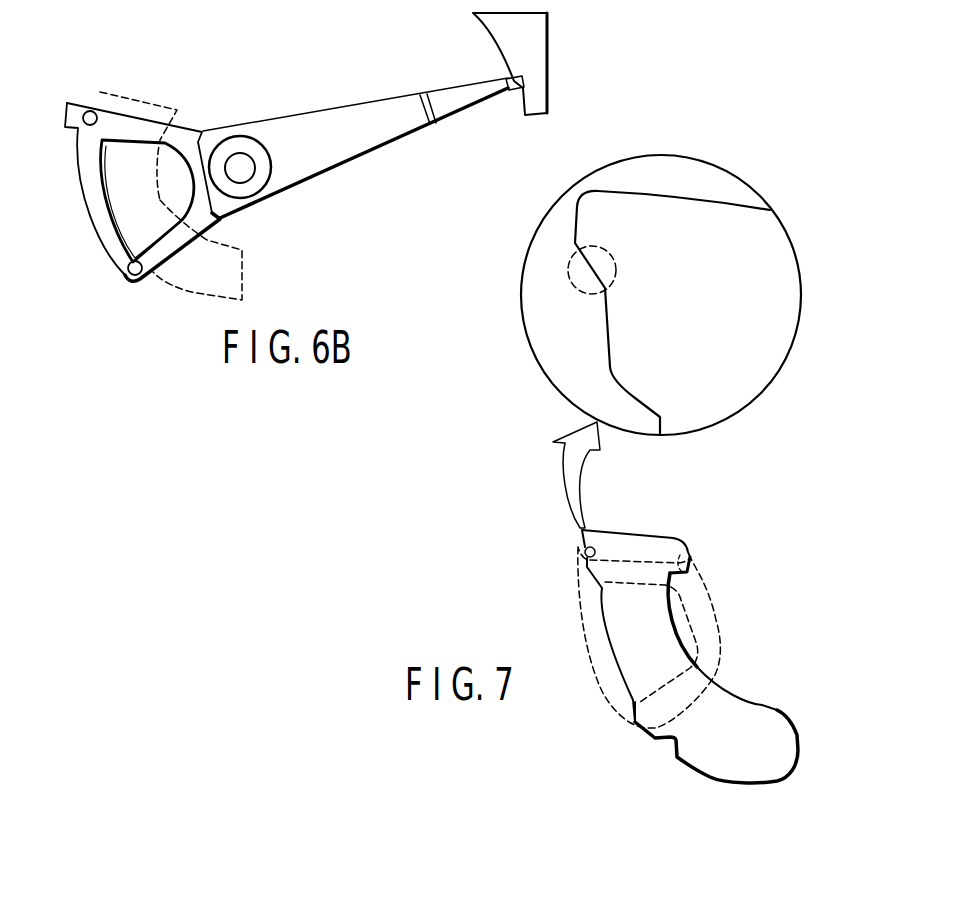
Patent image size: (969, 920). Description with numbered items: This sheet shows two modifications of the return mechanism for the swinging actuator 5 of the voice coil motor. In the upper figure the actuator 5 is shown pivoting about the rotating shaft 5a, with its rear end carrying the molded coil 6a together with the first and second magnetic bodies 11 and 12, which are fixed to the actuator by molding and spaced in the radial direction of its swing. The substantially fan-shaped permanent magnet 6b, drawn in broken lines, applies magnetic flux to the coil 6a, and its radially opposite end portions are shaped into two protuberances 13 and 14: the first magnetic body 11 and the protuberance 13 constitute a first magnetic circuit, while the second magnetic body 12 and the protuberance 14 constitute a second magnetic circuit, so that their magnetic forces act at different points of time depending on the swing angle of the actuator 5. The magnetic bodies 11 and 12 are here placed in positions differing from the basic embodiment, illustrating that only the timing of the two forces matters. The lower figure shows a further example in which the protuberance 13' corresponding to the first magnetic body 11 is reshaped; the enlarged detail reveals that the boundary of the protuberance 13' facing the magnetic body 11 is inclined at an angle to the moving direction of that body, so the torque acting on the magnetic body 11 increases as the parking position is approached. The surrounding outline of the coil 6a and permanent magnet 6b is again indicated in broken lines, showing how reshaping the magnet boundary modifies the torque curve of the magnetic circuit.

In FIG. 6B, the actuator 5 is at (360, 117).
In FIG. 6B, the rotating shaft 5a is at (240, 162).
In FIG. 7, the molded coil 6a is at (600, 690).
In FIG. 6B, the permanent magnet 6b is at (245, 282).
In FIG. 7, the permanent magnet 6b is at (785, 712).
In FIG. 6B, the first magnetic body 11 is at (78, 128).
In FIG. 7, the first magnetic body 11 is at (580, 290).
In FIG. 6B, the second magnetic body 12 is at (143, 276).
In FIG. 7, the second magnetic body 12 is at (698, 560).
In FIG. 6B, the protuberance 13 is at (136, 120).
In FIG. 7, the protuberance 13' is at (636, 309).
In FIG. 6B, the protuberance 14 is at (128, 270).